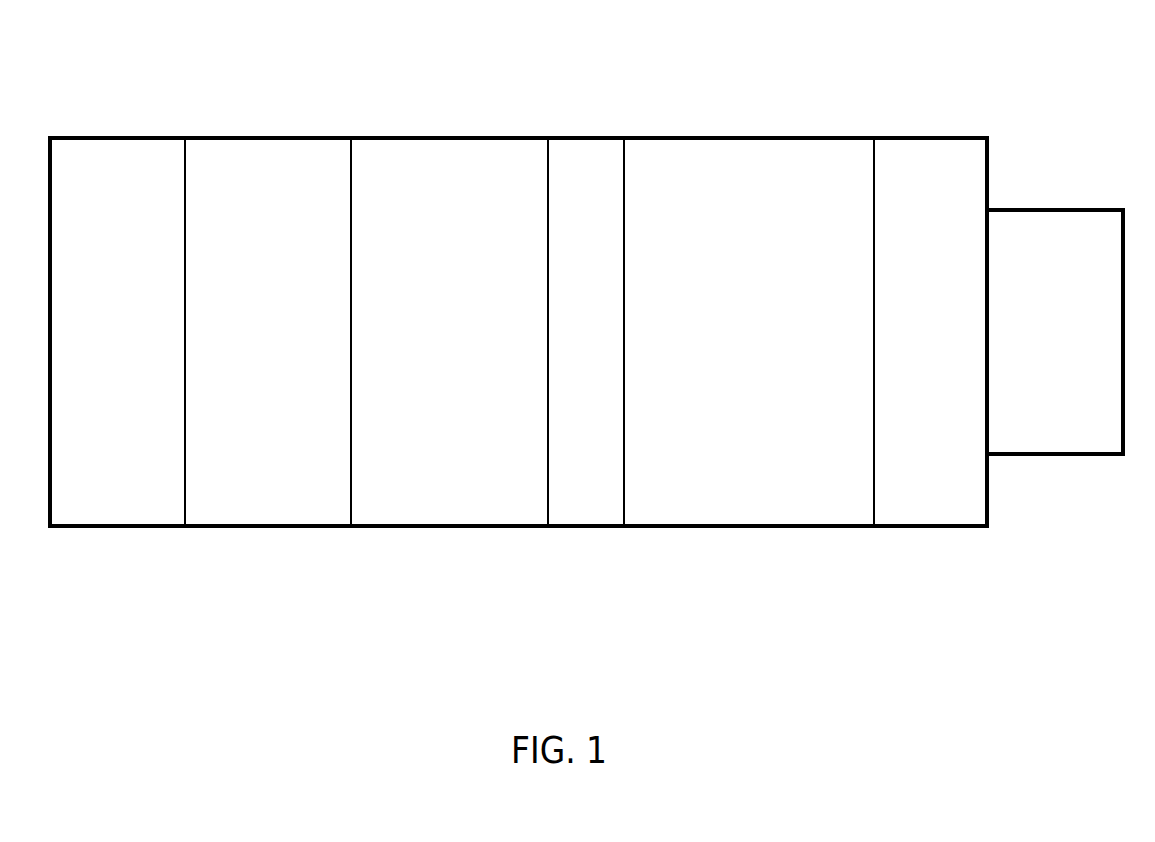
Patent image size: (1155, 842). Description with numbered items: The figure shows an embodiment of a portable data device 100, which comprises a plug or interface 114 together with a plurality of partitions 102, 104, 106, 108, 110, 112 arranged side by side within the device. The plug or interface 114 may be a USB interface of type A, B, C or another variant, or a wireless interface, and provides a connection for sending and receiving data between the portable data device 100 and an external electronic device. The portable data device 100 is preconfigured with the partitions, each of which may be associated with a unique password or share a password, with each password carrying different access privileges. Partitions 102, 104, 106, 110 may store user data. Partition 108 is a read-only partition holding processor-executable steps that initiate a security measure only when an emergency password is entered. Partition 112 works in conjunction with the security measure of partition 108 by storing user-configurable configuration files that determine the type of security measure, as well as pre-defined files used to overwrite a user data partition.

The portable data device 100 is at (117, 56).
The partition 102 is at (136, 346).
The partition 104 is at (275, 346).
The partition 106 is at (413, 346).
The partition 108 is at (563, 346).
The partition 110 is at (764, 346).
The partition 112 is at (906, 346).
The plug or interface 114 is at (1069, 346).